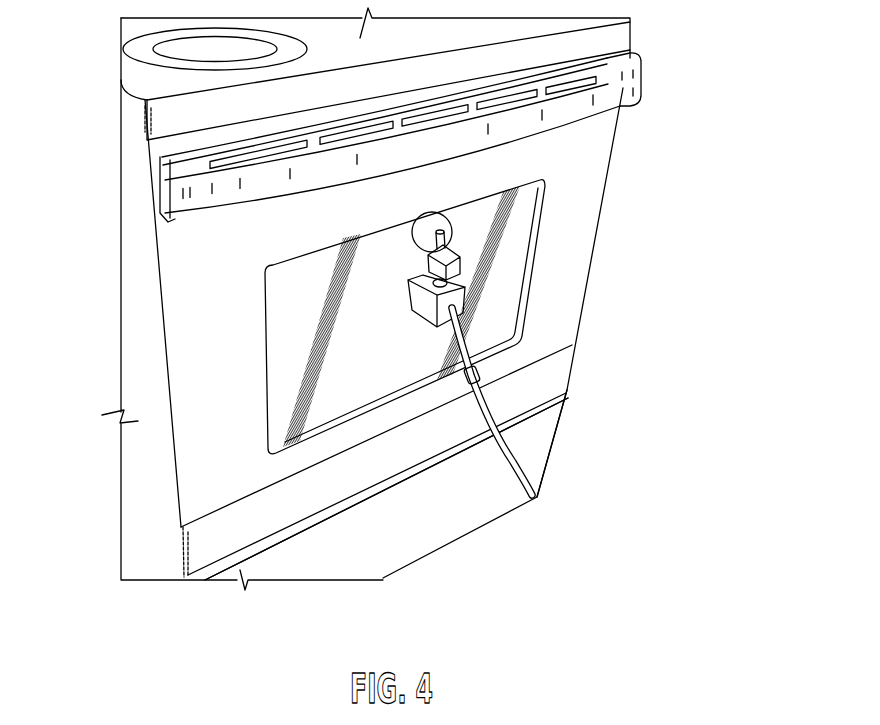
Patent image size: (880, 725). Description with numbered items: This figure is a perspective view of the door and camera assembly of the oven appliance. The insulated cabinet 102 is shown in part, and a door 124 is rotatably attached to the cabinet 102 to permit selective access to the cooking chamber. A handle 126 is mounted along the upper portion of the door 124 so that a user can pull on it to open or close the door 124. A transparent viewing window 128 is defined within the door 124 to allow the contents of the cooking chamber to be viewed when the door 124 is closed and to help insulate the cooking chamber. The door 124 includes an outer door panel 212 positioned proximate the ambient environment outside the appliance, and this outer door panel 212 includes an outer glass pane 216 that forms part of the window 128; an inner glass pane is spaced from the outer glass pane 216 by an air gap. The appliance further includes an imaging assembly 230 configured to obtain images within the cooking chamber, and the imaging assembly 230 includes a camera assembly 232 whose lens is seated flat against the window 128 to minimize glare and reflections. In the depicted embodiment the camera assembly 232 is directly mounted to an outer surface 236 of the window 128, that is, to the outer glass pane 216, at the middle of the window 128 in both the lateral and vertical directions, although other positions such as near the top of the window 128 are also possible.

The cabinet 102 is at (548, 424).
The door 124 is at (580, 220).
The handle 126 is at (630, 92).
The transparent viewing window 128 is at (517, 267).
The outer door panel 212 is at (557, 374).
The outer glass pane 216 is at (287, 287).
The imaging assembly 230 is at (392, 370).
The camera assembly 232 is at (479, 388).
The outer surface 236 is at (279, 397).